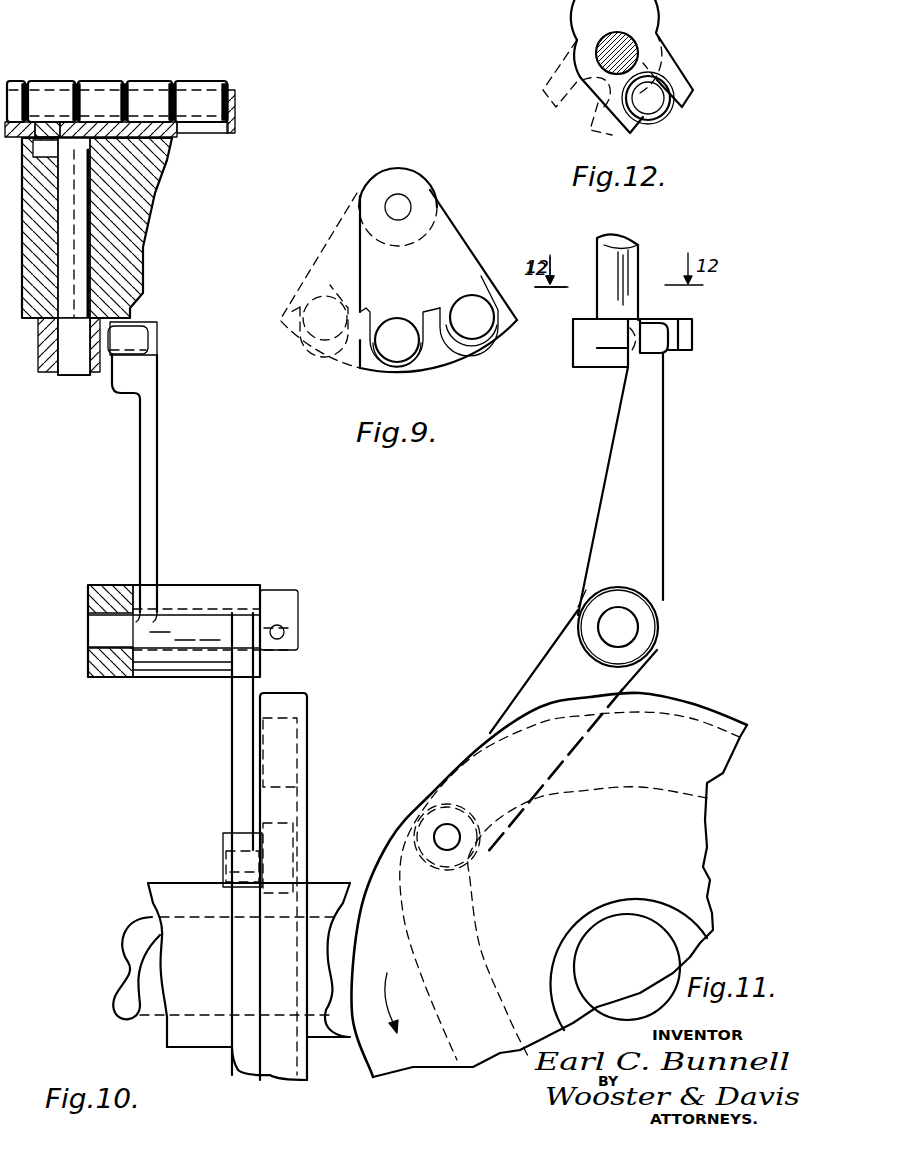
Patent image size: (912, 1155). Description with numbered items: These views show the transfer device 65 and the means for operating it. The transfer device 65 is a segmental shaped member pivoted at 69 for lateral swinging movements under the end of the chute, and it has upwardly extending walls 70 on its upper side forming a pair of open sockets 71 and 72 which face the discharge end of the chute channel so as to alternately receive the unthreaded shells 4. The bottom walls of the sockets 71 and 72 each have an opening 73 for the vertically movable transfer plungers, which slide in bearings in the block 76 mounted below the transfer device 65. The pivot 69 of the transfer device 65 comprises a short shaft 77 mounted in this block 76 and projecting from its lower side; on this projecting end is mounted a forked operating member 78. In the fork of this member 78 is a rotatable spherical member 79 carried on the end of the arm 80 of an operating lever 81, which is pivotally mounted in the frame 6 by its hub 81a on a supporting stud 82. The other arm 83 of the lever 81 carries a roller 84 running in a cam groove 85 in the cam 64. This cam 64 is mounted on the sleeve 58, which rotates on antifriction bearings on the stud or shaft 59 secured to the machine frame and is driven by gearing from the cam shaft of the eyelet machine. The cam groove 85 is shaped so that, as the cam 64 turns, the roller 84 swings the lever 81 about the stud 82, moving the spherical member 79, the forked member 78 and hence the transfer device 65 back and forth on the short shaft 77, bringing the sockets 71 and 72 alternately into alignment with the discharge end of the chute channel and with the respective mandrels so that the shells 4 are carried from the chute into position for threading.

In FIG. 10, the unthreaded shell 4 is at (96, 82).
In FIG. 10, the bracket 6 is at (103, 680).
In FIG. 10, the sleeve 58 is at (200, 1047).
In FIG. 10, the stud or shaft 59 is at (152, 1017).
In FIG. 11, the stud or shaft 59 is at (643, 910).
In FIG. 10, the cam 64 is at (307, 715).
In FIG. 11, the cam 64 is at (427, 777).
In FIG. 10, the transfer device 65 is at (236, 118).
In FIG. 9, the transfer device 65 is at (458, 247).
In FIG. 10, the pivot 69 is at (78, 125).
In FIG. 9, the pivot 69 is at (407, 203).
In FIG. 9, the upwardly extending walls 70 is at (297, 293).
In FIG. 9, the socket 71 is at (318, 290).
In FIG. 9, the socket 72 is at (447, 307).
In FIG. 10, the opening 73 is at (207, 132).
In FIG. 9, the opening 73 is at (397, 360).
In FIG. 10, the block 76 is at (133, 280).
In FIG. 10, the short shaft 77 is at (80, 242).
In FIG. 12, the short shaft 77 is at (637, 43).
In FIG. 11, the short shaft 77 is at (623, 263).
In FIG. 10, the forked operating member 78 is at (157, 335).
In FIG. 12, the forked operating member 78 is at (543, 90).
In FIG. 11, the forked operating member 78 is at (692, 330).
In FIG. 10, the rotatable spherical member 79 is at (153, 353).
In FIG. 12, the rotatable spherical member 79 is at (660, 123).
In FIG. 11, the rotatable spherical member 79 is at (668, 353).
In FIG. 10, the arm 80 is at (157, 473).
In FIG. 11, the arm 80 is at (657, 512).
In FIG. 10, the operating lever 81 is at (162, 563).
In FIG. 11, the operating lever 81 is at (590, 547).
In FIG. 10, the hub 81a is at (245, 590).
In FIG. 11, the hub 81a is at (653, 603).
In FIG. 10, the supporting stud 82 is at (188, 610).
In FIG. 11, the supporting stud 82 is at (627, 630).
In FIG. 10, the arm 83 is at (237, 752).
In FIG. 11, the arm 83 is at (530, 676).
In FIG. 10, the roller 84 is at (280, 822).
In FIG. 11, the roller 84 is at (447, 877).
In FIG. 10, the cam groove 85 is at (277, 718).
In FIG. 11, the cam groove 85 is at (620, 772).